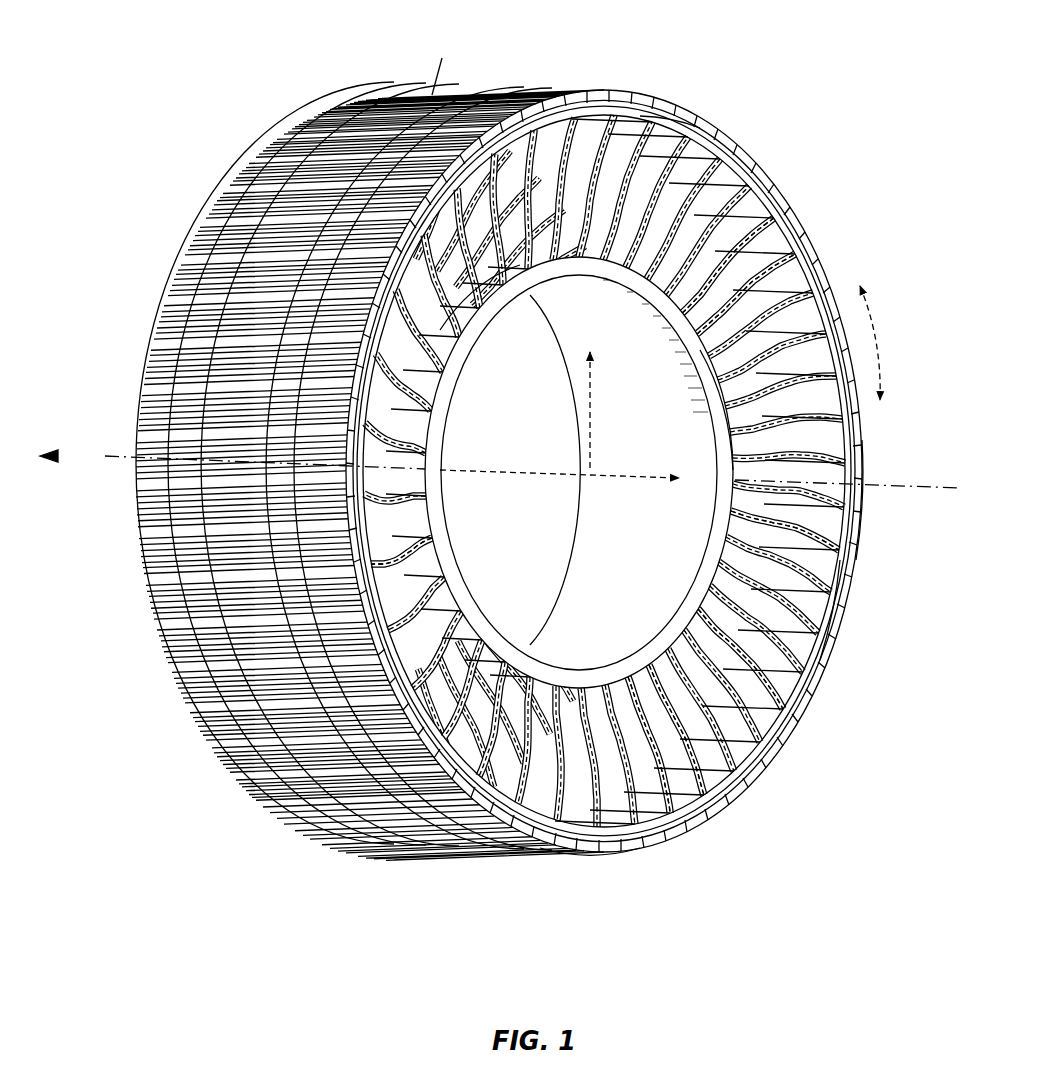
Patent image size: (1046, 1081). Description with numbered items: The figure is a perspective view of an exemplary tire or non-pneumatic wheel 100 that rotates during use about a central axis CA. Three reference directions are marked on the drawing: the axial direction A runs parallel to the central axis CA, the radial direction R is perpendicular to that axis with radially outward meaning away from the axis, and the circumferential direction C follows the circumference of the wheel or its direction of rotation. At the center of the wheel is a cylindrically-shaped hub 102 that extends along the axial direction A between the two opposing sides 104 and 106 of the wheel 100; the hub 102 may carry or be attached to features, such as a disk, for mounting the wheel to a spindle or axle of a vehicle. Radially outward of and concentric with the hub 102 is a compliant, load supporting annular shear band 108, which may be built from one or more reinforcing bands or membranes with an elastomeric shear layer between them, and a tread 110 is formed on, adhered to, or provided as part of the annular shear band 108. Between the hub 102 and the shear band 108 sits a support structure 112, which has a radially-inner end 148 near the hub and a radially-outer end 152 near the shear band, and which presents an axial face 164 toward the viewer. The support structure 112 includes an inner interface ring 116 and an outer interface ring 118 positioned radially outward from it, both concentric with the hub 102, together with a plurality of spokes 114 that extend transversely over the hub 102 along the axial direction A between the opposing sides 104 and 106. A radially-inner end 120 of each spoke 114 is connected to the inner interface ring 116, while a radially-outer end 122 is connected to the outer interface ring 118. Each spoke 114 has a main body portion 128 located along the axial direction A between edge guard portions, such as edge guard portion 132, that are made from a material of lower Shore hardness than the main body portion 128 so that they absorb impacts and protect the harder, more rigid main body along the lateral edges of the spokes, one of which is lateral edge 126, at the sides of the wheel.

The non-pneumatic wheel 100 is at (243, 42).
The hub 102 is at (478, 620).
The side of wheel 104 is at (294, 108).
The side of wheel 106 is at (632, 89).
The annular shear band 108 is at (843, 551).
The tread 110 is at (588, 855).
The support structure 112 is at (752, 243).
The spokes 114 is at (777, 288).
The inner interface ring 116 is at (470, 325).
The outer interface ring 118 is at (829, 600).
The radially-inner end of spoke 120 is at (417, 530).
The radially-outer end of spoke 122 is at (644, 808).
The lateral edge of spoke 126 is at (765, 696).
The main body portion 128 is at (438, 63).
The edge guard portion 132 is at (664, 150).
The radially-inner end of support structure 148 is at (713, 399).
The radially-outer end of support structure 152 is at (801, 248).
The axial face of support structure 164 is at (815, 530).
The axial direction A is at (88, 422).
The radial direction R is at (589, 396).
The circumferential direction C is at (880, 338).
The central axis CA is at (917, 487).